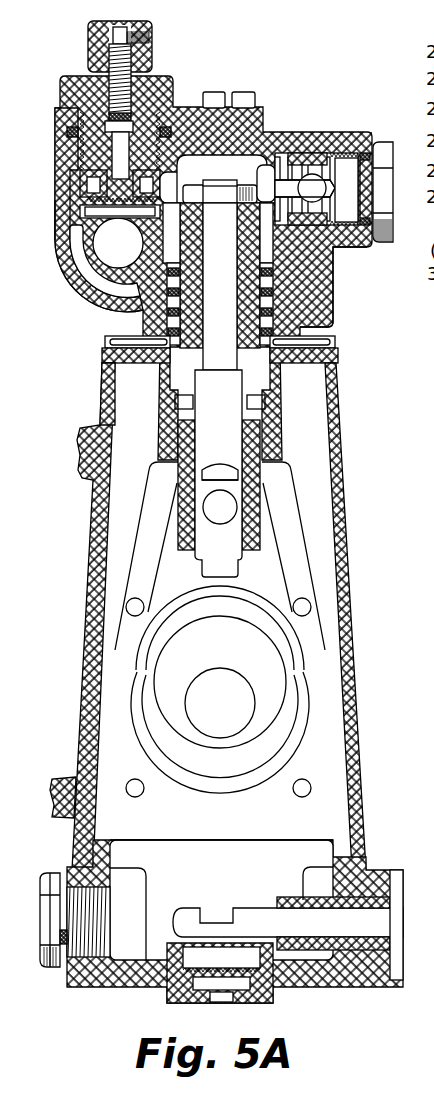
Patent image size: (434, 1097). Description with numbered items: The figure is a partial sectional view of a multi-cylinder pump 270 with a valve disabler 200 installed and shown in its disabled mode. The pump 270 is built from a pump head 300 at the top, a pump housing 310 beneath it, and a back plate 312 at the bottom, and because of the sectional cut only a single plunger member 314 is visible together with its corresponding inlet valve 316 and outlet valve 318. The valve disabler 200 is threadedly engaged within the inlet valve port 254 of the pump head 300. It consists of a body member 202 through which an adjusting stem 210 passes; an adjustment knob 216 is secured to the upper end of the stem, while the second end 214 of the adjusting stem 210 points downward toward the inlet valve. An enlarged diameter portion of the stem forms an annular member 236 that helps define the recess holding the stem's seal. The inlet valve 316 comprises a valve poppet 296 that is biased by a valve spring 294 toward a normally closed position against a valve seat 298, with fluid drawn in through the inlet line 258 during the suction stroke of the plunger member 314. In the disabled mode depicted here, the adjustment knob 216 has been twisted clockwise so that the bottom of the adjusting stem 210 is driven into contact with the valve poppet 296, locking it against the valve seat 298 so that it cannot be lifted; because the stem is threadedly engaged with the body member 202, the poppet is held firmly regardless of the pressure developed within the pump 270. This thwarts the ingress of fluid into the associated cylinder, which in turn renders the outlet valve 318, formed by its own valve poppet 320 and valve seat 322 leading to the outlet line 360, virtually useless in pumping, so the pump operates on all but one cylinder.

The valve disabler 200 is at (191, 39).
The body member 202 is at (60, 96).
The adjusting stem 210 is at (110, 68).
The second end 214 is at (110, 154).
The adjustment knob 216 is at (88, 32).
The annular member 236 is at (68, 134).
The inlet valve port 254 is at (187, 107).
The inlet line 258 is at (136, 254).
The pump 270 is at (346, 333).
The valve spring 294 is at (82, 178).
The valve poppet 296 is at (85, 203).
The valve seat 298 is at (83, 280).
The pump head 300 is at (328, 133).
The pump housing 310 is at (261, 824).
The back plate 312 is at (112, 850).
The plunger member 314 is at (193, 372).
The inlet valve 316 is at (43, 221).
The outlet valve 318 is at (347, 255).
The valve poppet 320 is at (292, 157).
The valve seat 322 is at (282, 153).
The outlet line 360 is at (313, 165).